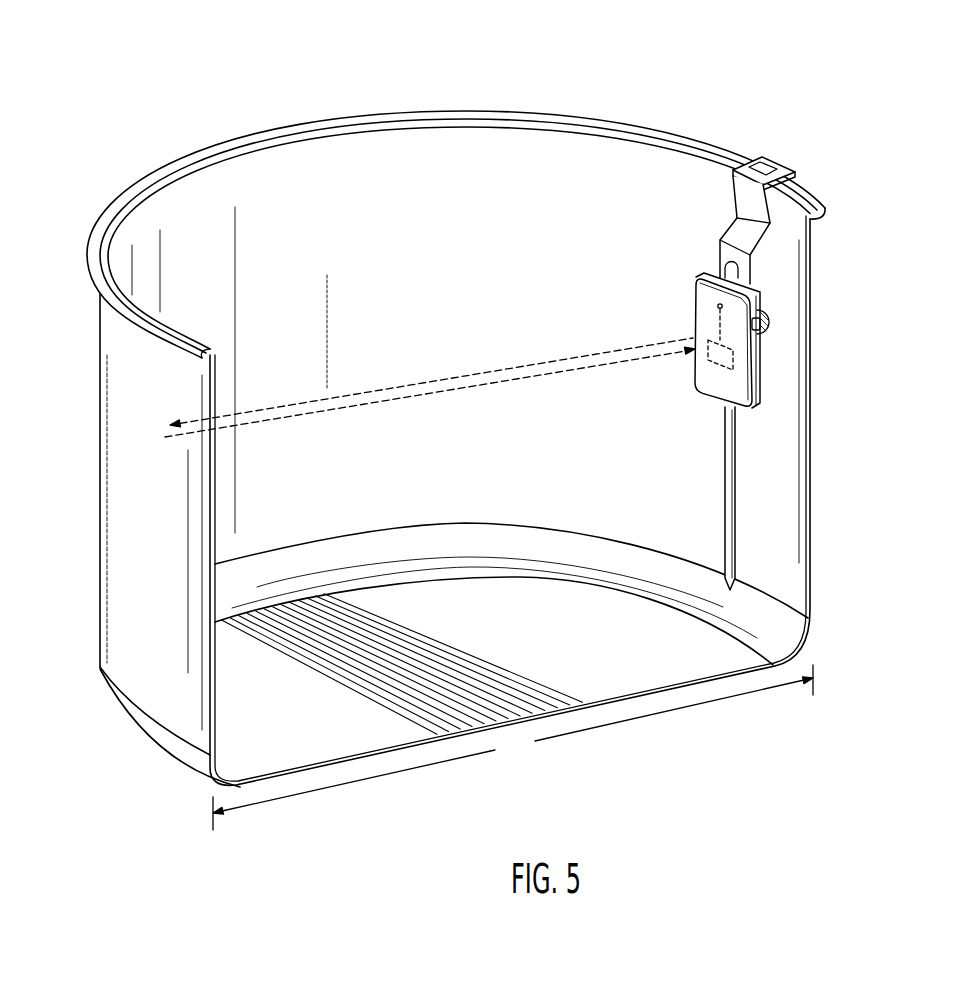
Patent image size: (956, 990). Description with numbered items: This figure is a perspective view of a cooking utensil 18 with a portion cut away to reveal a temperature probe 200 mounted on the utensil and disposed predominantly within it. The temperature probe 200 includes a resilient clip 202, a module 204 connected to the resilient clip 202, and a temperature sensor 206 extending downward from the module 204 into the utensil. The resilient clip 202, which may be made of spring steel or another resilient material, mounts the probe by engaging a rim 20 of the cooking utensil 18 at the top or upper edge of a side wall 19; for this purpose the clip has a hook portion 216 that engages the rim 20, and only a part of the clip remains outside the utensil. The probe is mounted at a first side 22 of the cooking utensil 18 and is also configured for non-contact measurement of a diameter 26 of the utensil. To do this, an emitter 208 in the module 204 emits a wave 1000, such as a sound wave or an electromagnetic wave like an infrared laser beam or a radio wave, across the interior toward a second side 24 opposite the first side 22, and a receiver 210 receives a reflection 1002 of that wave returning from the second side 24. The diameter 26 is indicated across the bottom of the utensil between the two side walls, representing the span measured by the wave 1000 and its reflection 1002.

The cooking utensil 18 is at (465, 421).
The side wall 19 is at (811, 512).
The rim 20 is at (825, 213).
The first side 22 is at (790, 145).
The second side 24 is at (122, 410).
The diameter 26 is at (513, 747).
The temperature probe 200 is at (756, 346).
The resilient clip 202 is at (792, 193).
The module 204 is at (696, 315).
The temperature sensor 206 is at (724, 490).
The emitter 208 is at (717, 307).
The receiver 210 is at (707, 368).
The hook portion 216 is at (796, 177).
The wave 1000 is at (418, 380).
The reflection 1002 is at (430, 394).